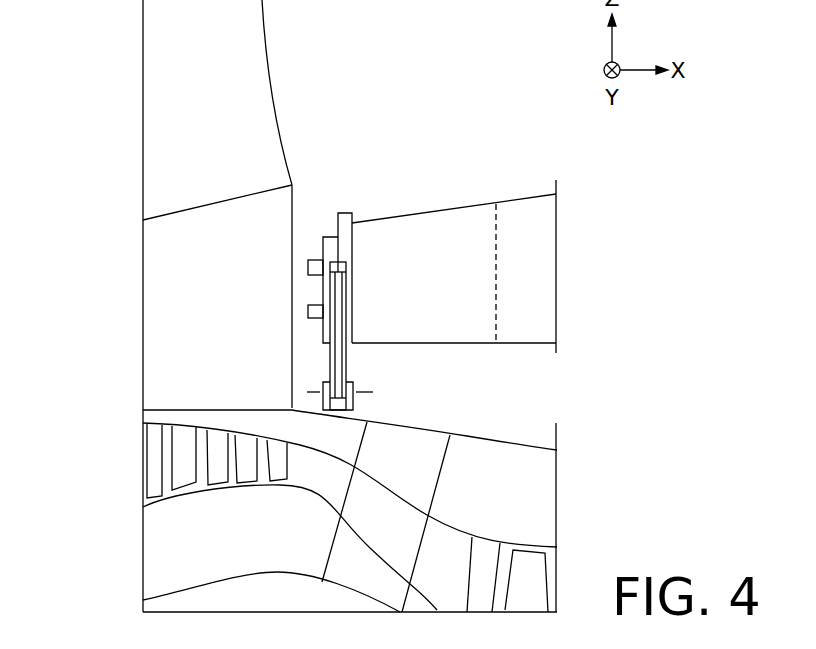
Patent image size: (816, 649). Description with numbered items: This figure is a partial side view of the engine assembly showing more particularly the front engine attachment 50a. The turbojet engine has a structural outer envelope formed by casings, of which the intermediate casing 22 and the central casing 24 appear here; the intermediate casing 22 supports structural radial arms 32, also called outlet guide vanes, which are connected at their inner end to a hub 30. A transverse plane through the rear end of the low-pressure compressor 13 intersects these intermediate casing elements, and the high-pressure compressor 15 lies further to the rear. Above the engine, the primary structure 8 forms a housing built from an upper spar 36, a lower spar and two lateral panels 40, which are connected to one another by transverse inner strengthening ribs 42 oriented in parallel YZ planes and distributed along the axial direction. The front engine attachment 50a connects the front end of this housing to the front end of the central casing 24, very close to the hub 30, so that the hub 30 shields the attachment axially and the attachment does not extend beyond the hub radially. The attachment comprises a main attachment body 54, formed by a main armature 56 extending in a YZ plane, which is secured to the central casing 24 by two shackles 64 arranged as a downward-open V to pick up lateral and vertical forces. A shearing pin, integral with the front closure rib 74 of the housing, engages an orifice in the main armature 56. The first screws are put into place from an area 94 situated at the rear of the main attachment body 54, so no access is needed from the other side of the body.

The primary structure 8 is at (467, 205).
The low-pressure compressor 13 is at (182, 453).
The high-pressure compressor 15 is at (530, 573).
The intermediate casing 22 is at (265, 20).
The central casing 24 is at (467, 436).
The hub 30 is at (160, 278).
The structural radial arms 32 is at (182, 31).
The upper spar 36 is at (529, 194).
The lateral panels 40 is at (474, 318).
The transverse inner strengthening ribs 42 is at (497, 228).
The front engine attachment 50a is at (348, 207).
The main attachment body 54 is at (323, 245).
The main armature 56 is at (331, 257).
The shackles 64 is at (338, 372).
The front closure rib 74 is at (357, 242).
The area 94 is at (428, 384).